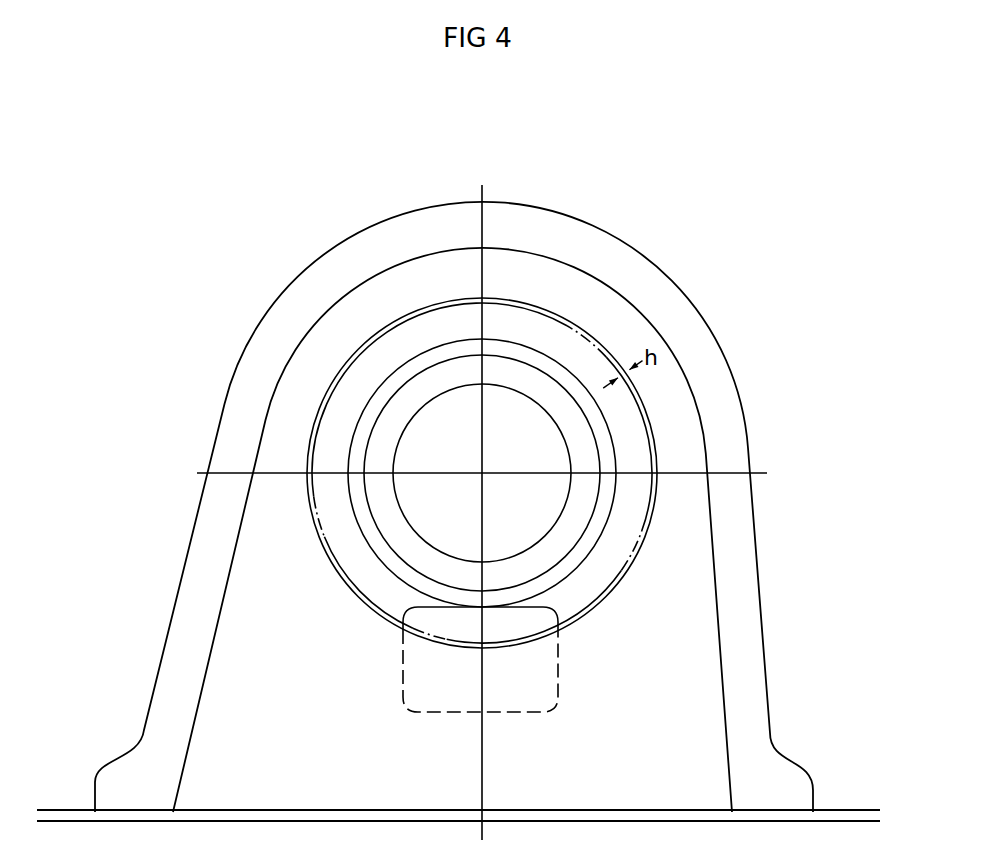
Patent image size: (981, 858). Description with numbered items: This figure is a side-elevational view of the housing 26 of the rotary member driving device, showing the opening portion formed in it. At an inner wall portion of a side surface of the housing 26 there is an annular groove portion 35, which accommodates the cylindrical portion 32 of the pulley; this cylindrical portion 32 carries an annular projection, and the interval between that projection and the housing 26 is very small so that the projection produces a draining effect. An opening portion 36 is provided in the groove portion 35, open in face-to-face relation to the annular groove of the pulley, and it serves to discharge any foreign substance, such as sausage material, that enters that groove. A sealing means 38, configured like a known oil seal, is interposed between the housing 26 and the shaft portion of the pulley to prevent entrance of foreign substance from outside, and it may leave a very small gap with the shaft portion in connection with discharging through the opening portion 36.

The housing 26 is at (755, 770).
The cylindrical portion 32 is at (643, 405).
The annular groove portion 35 is at (505, 323).
The opening portion 36 is at (527, 622).
The sealing means 38 is at (417, 397).